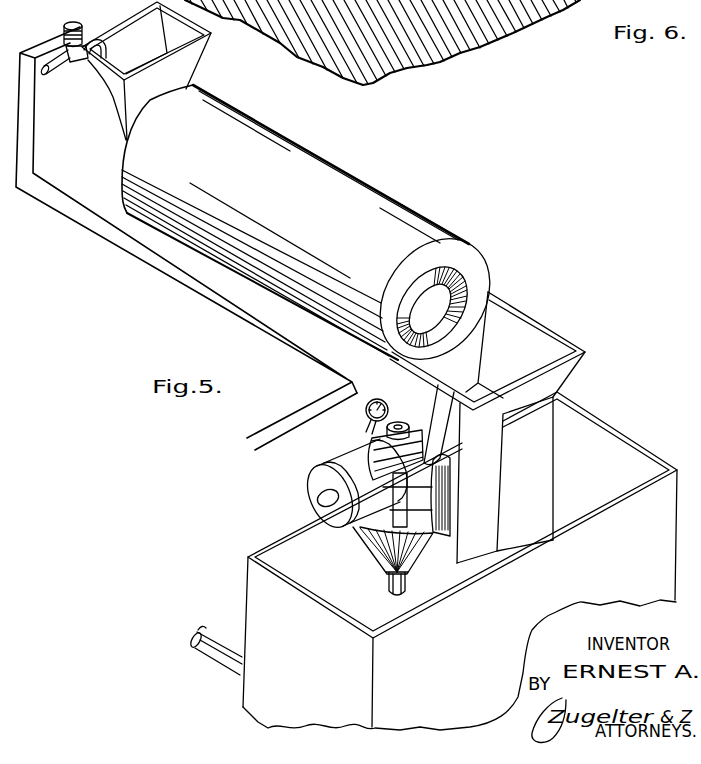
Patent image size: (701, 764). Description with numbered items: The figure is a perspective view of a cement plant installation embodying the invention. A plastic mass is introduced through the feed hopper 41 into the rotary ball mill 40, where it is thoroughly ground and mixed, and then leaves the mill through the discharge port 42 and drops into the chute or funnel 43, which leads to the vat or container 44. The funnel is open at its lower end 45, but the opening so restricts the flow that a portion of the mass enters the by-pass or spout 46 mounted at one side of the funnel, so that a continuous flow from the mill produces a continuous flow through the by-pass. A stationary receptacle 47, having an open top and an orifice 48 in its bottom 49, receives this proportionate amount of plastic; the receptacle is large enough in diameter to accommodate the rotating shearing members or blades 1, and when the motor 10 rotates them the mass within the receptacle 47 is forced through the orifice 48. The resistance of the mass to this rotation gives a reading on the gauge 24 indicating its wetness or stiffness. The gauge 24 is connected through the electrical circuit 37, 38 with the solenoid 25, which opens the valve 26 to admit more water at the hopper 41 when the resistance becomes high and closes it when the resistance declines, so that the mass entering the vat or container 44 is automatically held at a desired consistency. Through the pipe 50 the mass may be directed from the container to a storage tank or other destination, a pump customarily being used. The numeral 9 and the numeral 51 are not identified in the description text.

The blades 1 is at (378, 522).
The valve nut 9 is at (416, 426).
The motor 10 is at (317, 479).
The gauge 24 is at (362, 433).
The solenoid 25 is at (80, 40).
The valve 26 is at (82, 60).
The electrical circuit 37 is at (300, 410).
The electrical circuit 38 is at (308, 423).
The rotary ball mill 40 is at (347, 184).
The feed hopper 41 is at (185, 62).
The discharge port 42 is at (458, 288).
The chute or funnel 43 is at (533, 335).
The vat or container 44 is at (622, 458).
The lower end 45 is at (480, 556).
The by-pass or spout 46 is at (446, 428).
The stationary receptacle 47 is at (446, 518).
The orifice 48 is at (387, 590).
The bottom 49 is at (420, 563).
The pipe 50 is at (205, 660).
The wall section 51 is at (561, 7).